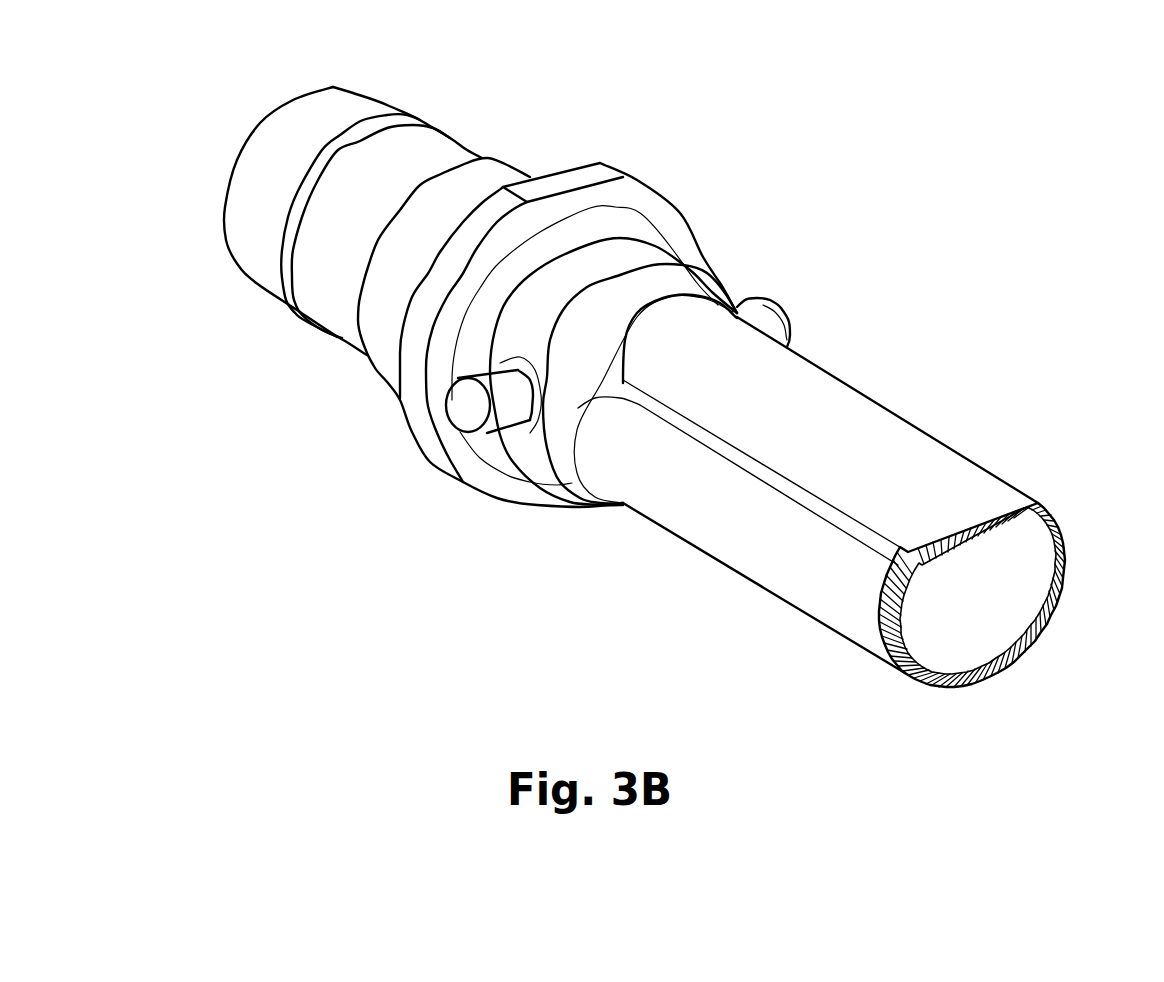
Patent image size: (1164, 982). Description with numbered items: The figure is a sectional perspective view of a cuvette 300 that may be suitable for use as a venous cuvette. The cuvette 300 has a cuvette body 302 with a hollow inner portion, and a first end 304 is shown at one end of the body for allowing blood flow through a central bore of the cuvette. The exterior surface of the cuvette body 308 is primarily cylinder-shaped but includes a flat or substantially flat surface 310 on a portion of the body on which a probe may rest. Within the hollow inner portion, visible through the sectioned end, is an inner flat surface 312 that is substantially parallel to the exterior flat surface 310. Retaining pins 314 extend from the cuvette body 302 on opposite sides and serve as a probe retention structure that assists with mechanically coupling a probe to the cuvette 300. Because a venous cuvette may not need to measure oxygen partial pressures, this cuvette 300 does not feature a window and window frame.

The cuvette 300 is at (948, 246).
The cuvette body 302 is at (677, 287).
The first end 304 is at (253, 132).
The exterior surface of the cuvette body 308 is at (753, 547).
The flat surface 310 is at (856, 462).
The inner flat surface 312 is at (987, 537).
The retaining pins 314 is at (768, 317).